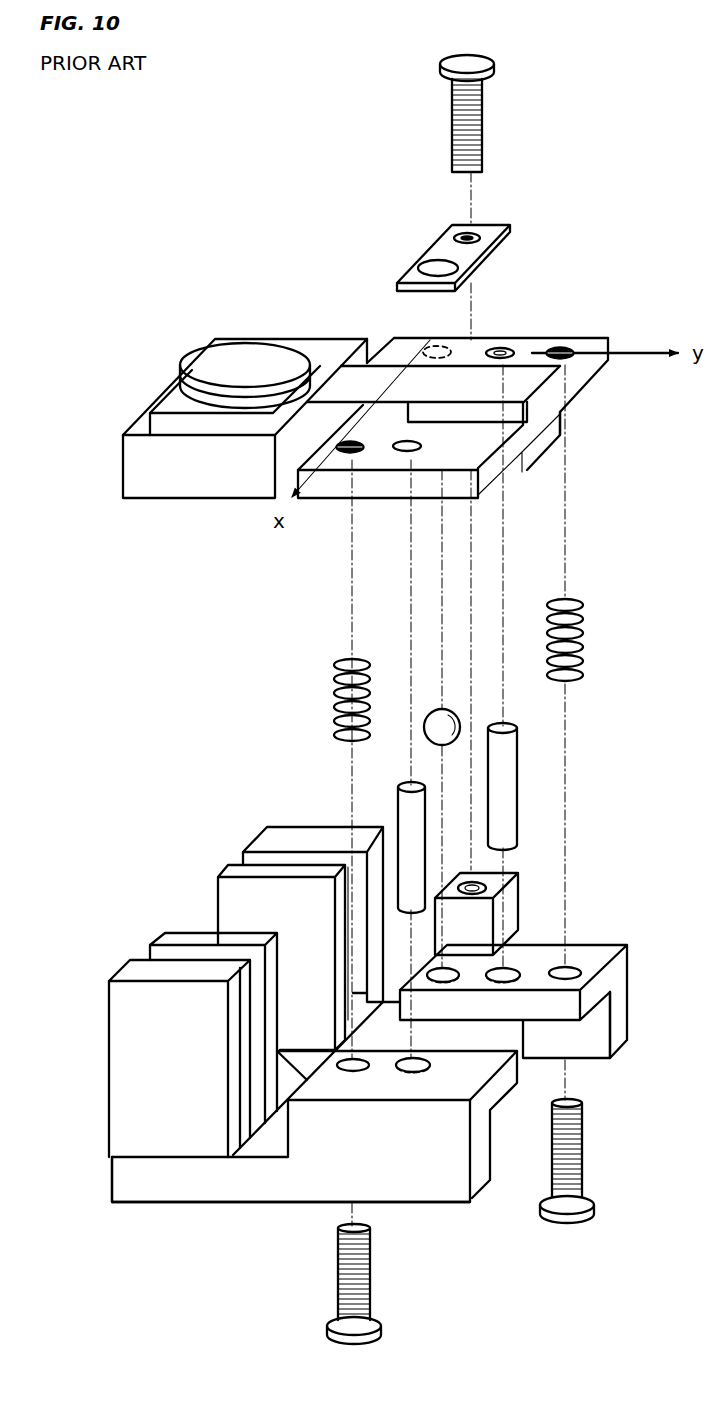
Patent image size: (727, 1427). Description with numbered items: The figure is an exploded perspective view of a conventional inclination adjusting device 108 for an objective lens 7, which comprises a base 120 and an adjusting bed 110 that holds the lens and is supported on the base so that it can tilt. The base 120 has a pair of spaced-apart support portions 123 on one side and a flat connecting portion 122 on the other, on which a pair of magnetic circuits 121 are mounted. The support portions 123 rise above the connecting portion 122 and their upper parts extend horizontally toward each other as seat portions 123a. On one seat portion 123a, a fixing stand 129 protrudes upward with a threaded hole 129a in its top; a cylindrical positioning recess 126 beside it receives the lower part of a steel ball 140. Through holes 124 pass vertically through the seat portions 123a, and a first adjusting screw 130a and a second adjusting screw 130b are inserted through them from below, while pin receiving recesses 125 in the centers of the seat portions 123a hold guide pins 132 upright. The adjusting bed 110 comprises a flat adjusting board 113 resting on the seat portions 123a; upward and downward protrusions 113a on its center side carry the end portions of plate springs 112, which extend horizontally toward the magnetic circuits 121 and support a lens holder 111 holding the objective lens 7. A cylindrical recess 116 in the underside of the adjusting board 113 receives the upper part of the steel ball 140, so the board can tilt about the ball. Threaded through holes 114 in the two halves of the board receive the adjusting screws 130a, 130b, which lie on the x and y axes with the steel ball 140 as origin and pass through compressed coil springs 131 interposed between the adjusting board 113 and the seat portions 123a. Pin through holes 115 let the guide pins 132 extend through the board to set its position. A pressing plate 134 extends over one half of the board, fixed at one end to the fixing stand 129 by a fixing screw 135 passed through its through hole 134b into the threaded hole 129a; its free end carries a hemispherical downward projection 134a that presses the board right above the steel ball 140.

The objective lens 7 is at (205, 363).
The inclination adjusting device 108 is at (270, 1318).
The adjusting bed 110 is at (275, 503).
The lens holder 111 is at (125, 476).
The plate springs 112 is at (405, 380).
The adjusting board 113 is at (612, 340).
The upward and downward protrusions 113a is at (552, 388).
The threaded through holes 114 is at (566, 352).
The pin through holes 115 is at (502, 351).
The cylindrical recess 116 is at (432, 343).
The base 120 is at (245, 1228).
The magnetic circuits 121 is at (132, 957).
The connecting portion 122 is at (133, 1190).
The support portions 123 is at (622, 1033).
The seat portions 123a is at (598, 993).
The through holes 124 is at (570, 968).
The pin receiving recesses 125 is at (433, 1065).
The positioning recess 126 is at (452, 970).
The fixing stand 129 is at (517, 898).
The threaded hole 129a is at (480, 884).
The first adjusting screw 130a is at (592, 1205).
The second adjusting screw 130b is at (381, 1324).
The coil springs 131 is at (340, 690).
The guide pins 132 is at (505, 787).
The pressing plate 134 is at (438, 240).
The hemispherical downward projection 134a is at (440, 290).
The through hole 134b is at (474, 236).
The fixing screw 135 is at (480, 104).
The steel ball 140 is at (428, 733).